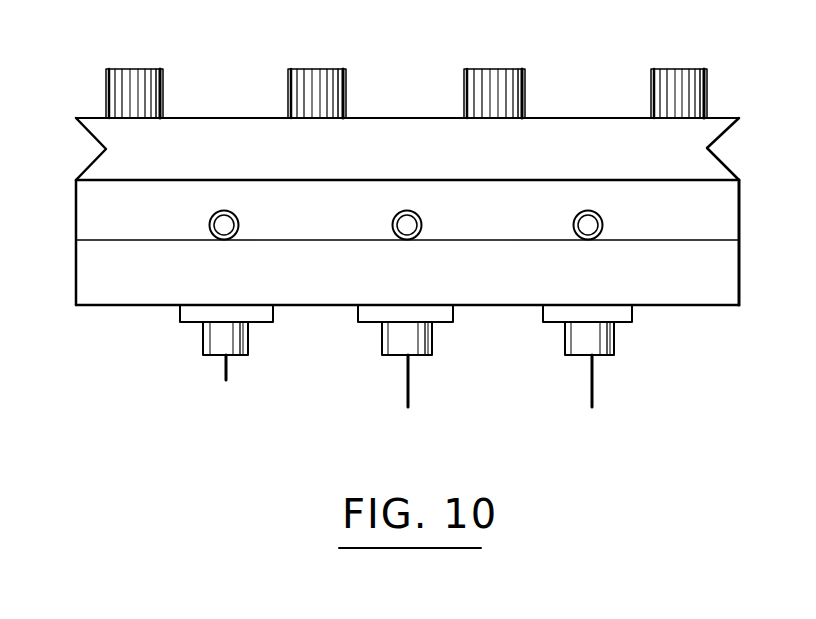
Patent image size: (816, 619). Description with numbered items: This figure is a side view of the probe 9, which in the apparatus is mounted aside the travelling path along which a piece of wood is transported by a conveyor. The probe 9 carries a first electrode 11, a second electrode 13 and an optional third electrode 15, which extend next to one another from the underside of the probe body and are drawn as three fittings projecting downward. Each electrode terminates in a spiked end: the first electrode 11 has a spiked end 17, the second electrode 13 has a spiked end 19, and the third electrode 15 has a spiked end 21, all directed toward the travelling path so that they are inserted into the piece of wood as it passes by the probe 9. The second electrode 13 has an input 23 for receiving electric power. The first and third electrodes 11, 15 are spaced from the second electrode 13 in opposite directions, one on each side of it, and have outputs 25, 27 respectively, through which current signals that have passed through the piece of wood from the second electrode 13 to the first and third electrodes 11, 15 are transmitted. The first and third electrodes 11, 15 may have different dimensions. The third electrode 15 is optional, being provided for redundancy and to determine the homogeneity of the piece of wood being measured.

The probe 9 is at (88, 78).
The first electrode 11 is at (197, 343).
The second electrode 13 is at (379, 343).
The third electrode 15 is at (561, 343).
The spiked end 17 is at (233, 373).
The spiked end 19 is at (413, 394).
The spiked end 21 is at (603, 397).
The input 23 is at (420, 215).
The output 25 is at (237, 215).
The output 27 is at (601, 215).